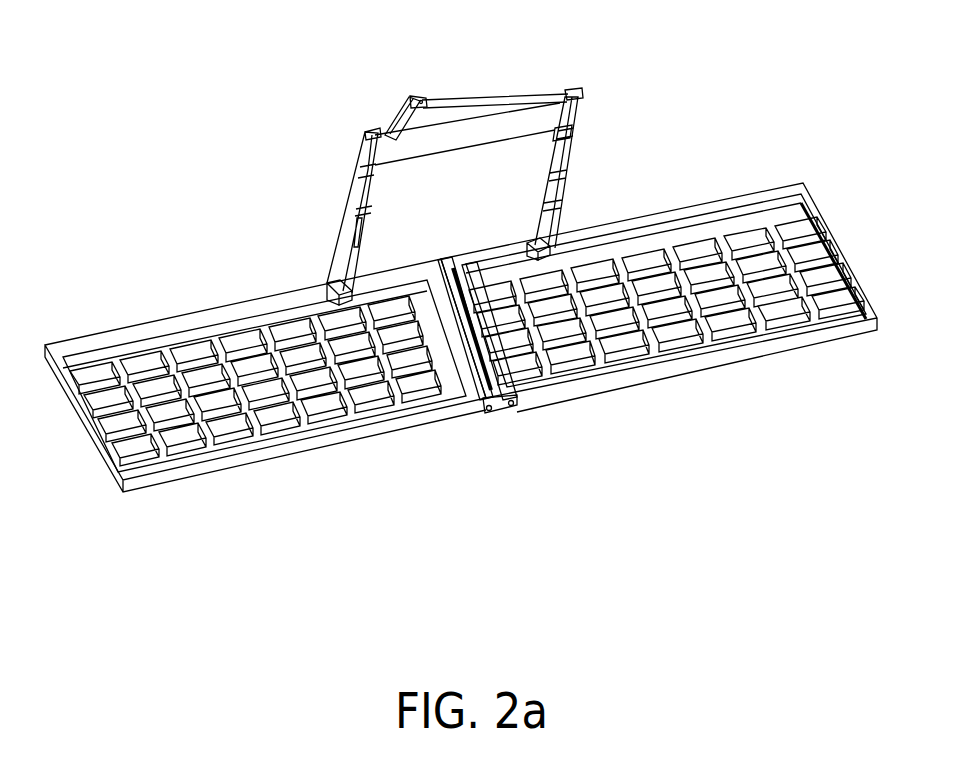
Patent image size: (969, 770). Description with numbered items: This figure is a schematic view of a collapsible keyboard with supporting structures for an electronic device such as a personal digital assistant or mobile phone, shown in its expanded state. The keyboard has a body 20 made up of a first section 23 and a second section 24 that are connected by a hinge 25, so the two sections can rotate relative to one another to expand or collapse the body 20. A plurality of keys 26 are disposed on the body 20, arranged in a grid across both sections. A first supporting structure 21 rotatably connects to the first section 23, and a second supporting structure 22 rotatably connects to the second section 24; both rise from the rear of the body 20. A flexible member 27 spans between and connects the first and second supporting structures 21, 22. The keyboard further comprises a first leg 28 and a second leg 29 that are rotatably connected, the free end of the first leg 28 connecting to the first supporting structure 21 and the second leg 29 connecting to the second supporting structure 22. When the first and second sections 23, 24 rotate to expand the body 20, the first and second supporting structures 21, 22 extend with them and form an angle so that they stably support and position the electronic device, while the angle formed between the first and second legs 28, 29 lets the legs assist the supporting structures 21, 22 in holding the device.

The body 20 is at (461, 400).
The first supporting structure 21 is at (350, 221).
The second supporting structure 22 is at (575, 147).
The first section 23 is at (265, 416).
The second section 24 is at (563, 402).
The hinge 25 is at (513, 459).
The keys 26 is at (248, 432).
The flexible member 27 is at (507, 125).
The first leg 28 is at (398, 112).
The second leg 29 is at (441, 112).